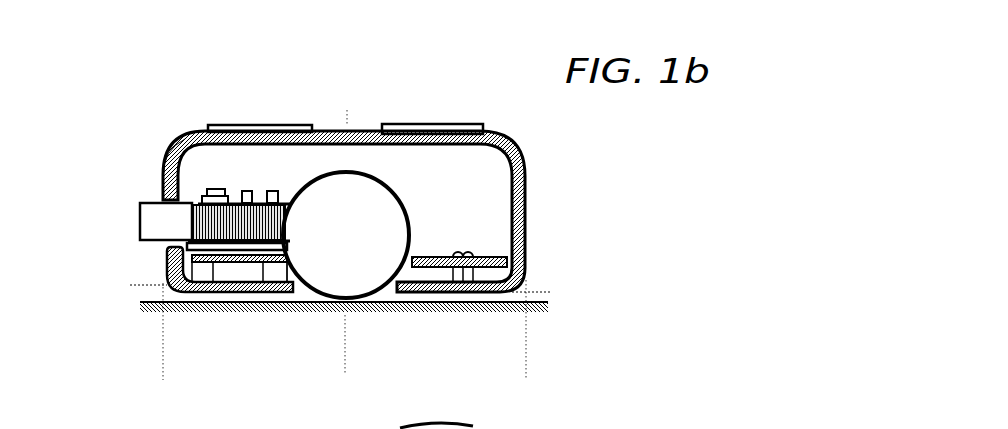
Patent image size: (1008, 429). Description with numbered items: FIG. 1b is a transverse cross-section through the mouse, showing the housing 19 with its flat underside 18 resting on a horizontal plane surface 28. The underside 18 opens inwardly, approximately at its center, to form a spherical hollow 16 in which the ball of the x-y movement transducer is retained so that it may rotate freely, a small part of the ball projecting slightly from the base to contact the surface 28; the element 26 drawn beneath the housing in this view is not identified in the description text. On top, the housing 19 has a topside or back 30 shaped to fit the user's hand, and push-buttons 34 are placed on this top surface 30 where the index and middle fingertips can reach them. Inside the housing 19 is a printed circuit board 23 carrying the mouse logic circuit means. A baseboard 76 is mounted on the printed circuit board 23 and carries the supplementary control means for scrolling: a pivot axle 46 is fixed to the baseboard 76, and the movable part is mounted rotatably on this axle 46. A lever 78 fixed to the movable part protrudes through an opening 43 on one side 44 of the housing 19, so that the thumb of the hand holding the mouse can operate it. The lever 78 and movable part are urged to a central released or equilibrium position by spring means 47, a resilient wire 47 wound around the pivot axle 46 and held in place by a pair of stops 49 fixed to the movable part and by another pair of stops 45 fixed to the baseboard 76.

The spherical hollow 16 is at (303, 290).
The underside 18 is at (200, 292).
The housing 19 is at (530, 176).
The printed circuit board 23 is at (493, 250).
The wheel 26 is at (390, 290).
The horizontal plane surface 28 is at (492, 320).
The topside 30 is at (197, 128).
The push-buttons 34 is at (265, 117).
The opening 43 is at (163, 202).
The side of the housing 44 is at (163, 257).
The pair of stops 45 is at (275, 188).
The pivot axle 46 is at (167, 200).
The spring means 47 is at (258, 190).
The pair of stops 49 is at (241, 187).
The baseboard 76 is at (258, 290).
The lever 78 is at (138, 222).